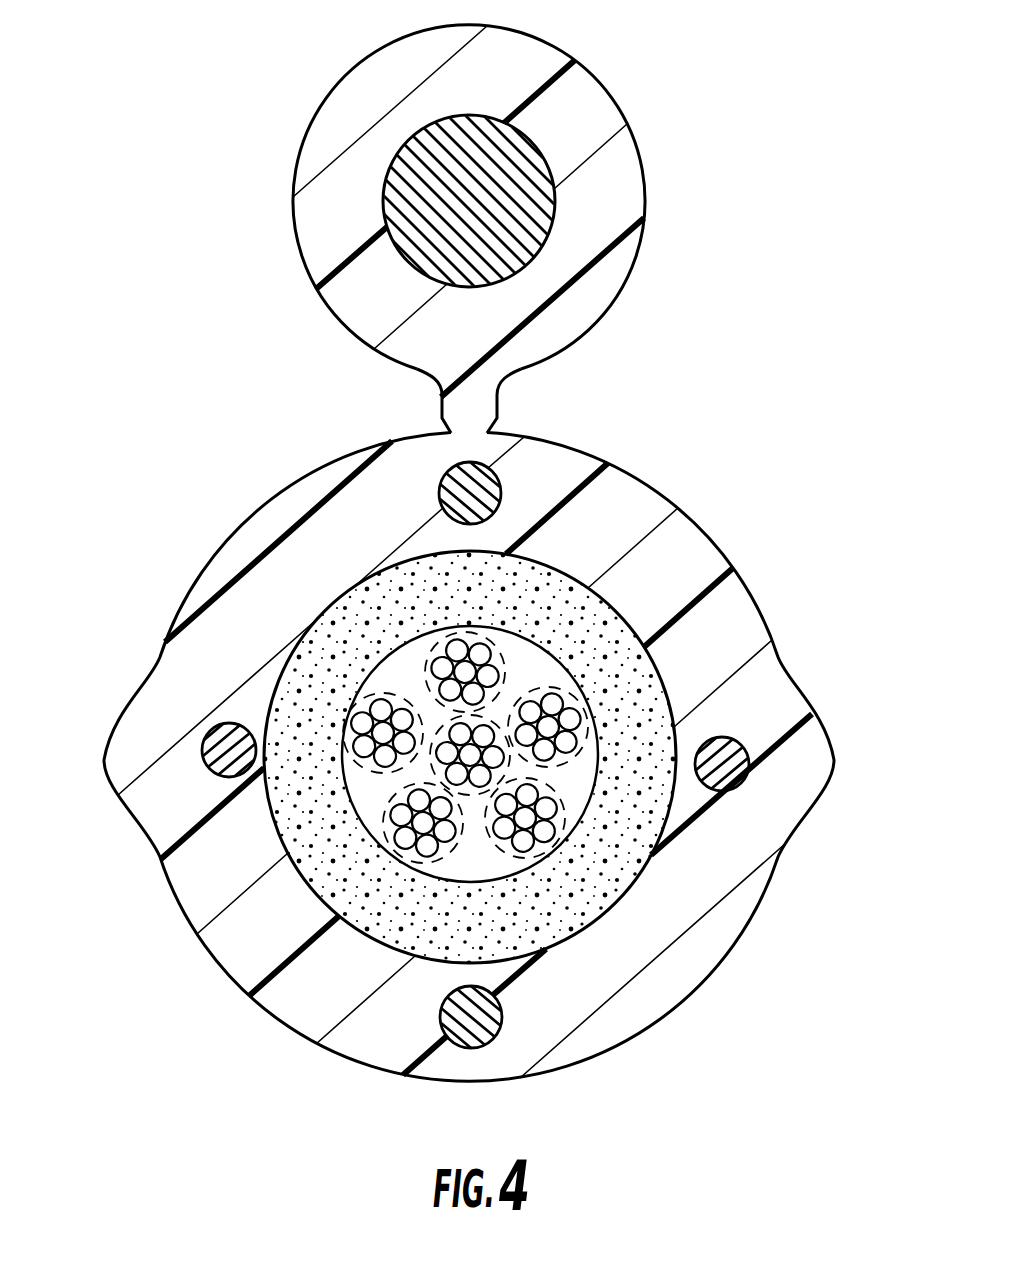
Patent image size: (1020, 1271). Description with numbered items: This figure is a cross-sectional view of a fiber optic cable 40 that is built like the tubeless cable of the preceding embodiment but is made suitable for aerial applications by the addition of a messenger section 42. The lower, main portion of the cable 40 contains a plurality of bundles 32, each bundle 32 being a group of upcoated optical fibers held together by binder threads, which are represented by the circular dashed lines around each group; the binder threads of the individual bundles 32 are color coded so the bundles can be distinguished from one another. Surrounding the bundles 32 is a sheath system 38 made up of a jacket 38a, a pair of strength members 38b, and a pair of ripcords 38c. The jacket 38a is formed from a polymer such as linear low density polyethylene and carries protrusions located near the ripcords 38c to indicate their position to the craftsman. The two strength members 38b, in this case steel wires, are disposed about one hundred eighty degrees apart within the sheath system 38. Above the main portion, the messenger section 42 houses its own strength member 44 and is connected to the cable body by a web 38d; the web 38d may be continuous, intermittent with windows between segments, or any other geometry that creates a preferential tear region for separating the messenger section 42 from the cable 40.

The bundles 32 is at (548, 858).
The sheath system 38 is at (292, 988).
The jacket 38a is at (176, 854).
The strength members 38b is at (483, 490).
The ripcords 38c is at (203, 748).
The web 38d is at (482, 402).
The cable 40 is at (718, 188).
The messenger section 42 is at (326, 204).
The strength member 44 is at (517, 225).